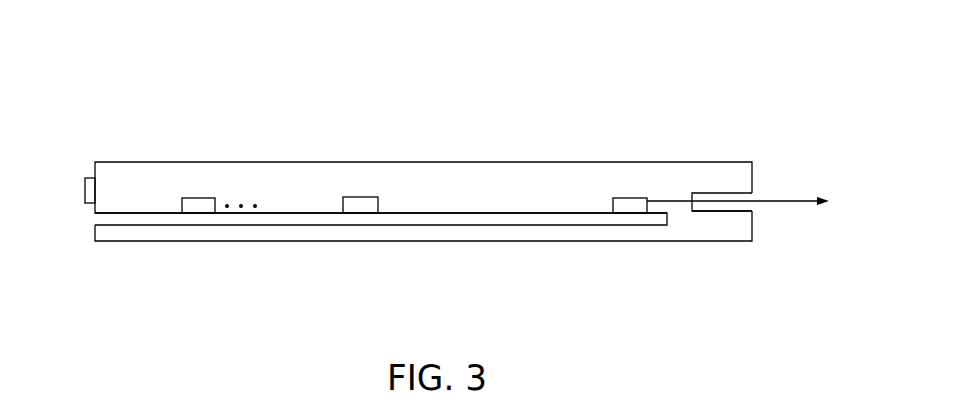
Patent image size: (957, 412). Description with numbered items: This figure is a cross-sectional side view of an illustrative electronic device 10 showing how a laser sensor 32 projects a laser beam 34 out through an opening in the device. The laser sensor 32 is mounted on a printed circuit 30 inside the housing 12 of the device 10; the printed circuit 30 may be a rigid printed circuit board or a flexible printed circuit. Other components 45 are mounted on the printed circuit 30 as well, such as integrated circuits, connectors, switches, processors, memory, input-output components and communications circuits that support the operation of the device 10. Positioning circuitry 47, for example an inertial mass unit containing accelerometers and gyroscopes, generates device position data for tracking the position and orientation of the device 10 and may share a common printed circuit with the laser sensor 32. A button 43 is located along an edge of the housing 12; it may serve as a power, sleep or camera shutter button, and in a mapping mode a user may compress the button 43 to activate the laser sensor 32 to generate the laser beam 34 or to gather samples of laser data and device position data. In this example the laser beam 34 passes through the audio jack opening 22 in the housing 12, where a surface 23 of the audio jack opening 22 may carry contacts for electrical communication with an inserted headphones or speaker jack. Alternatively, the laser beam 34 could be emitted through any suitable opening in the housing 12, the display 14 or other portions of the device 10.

The electronic device 10 is at (574, 80).
The housing 12 is at (752, 227).
The display 14 is at (337, 162).
The audio jack opening 22 is at (760, 191).
The surface of audio jack opening 23 is at (715, 212).
The printed circuit 30 is at (484, 218).
The laser sensor 32 is at (626, 203).
The laser beam 34 is at (795, 205).
The button 43 is at (85, 190).
The components 45 is at (198, 198).
The positioning circuitry 47 is at (362, 197).